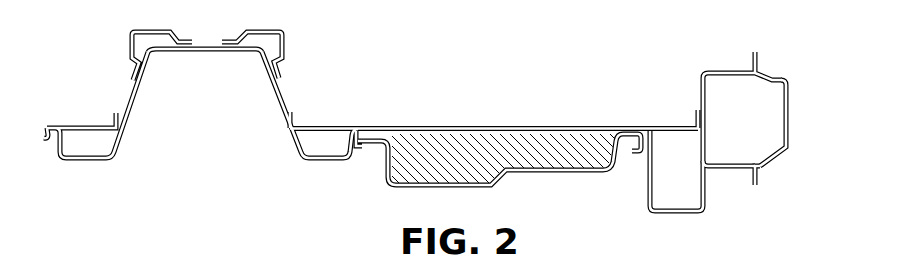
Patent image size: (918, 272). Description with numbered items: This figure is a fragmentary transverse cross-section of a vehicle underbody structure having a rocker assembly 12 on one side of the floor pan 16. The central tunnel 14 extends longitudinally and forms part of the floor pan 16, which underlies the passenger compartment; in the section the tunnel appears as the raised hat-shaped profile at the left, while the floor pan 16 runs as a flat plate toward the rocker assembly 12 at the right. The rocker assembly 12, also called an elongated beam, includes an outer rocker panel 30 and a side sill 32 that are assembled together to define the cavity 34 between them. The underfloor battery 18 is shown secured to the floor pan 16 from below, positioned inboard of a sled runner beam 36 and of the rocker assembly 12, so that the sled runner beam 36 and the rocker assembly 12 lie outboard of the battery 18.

The rocker assembly 12 is at (727, 66).
The central tunnel 14 is at (130, 97).
The floor pan 16 is at (380, 125).
The battery 18 is at (500, 152).
The outer rocker panel 30 is at (786, 117).
The side sill 32 is at (700, 92).
The cavity 34 is at (737, 145).
The sled runner beam 36 is at (648, 193).